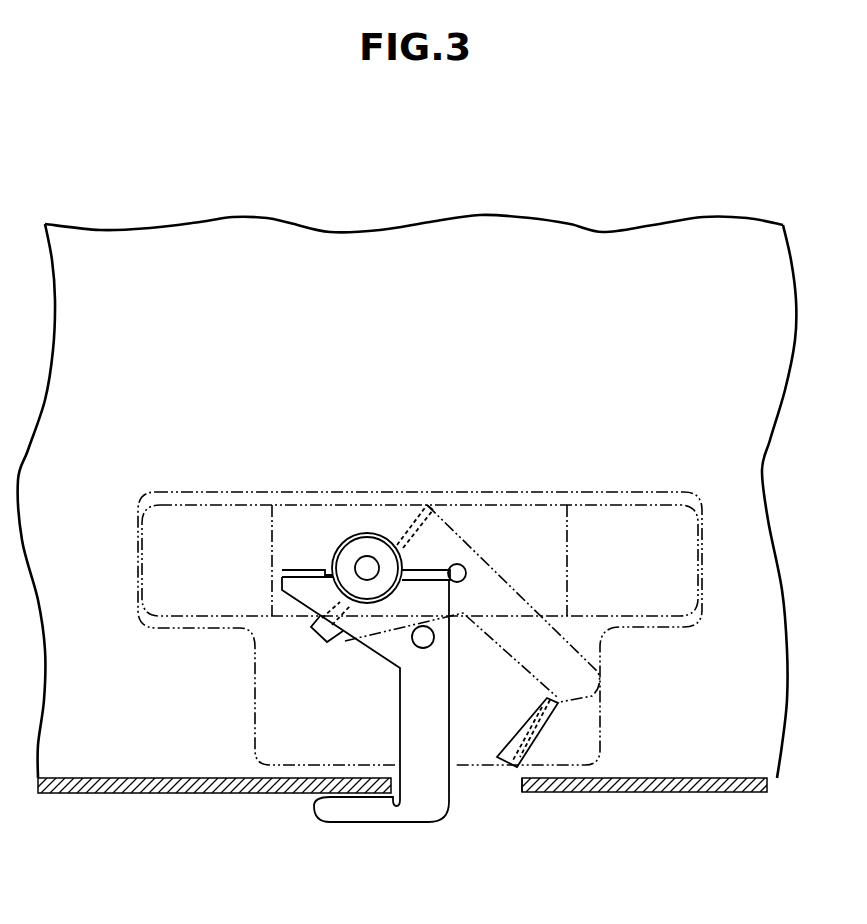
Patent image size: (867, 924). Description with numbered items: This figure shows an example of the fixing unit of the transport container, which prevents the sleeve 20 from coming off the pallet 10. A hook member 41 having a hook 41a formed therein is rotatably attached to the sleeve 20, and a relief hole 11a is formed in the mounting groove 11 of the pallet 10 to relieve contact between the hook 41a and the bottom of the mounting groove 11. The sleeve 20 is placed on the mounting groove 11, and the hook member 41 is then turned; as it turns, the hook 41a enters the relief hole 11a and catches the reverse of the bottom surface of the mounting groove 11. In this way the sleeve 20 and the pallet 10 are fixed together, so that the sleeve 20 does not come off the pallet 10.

The pallet 10 is at (640, 846).
The mounting groove 11 is at (248, 796).
The relief hole 11a is at (482, 787).
The sleeve 20 is at (661, 312).
The hook member 41 is at (437, 700).
The hook 41a is at (363, 813).